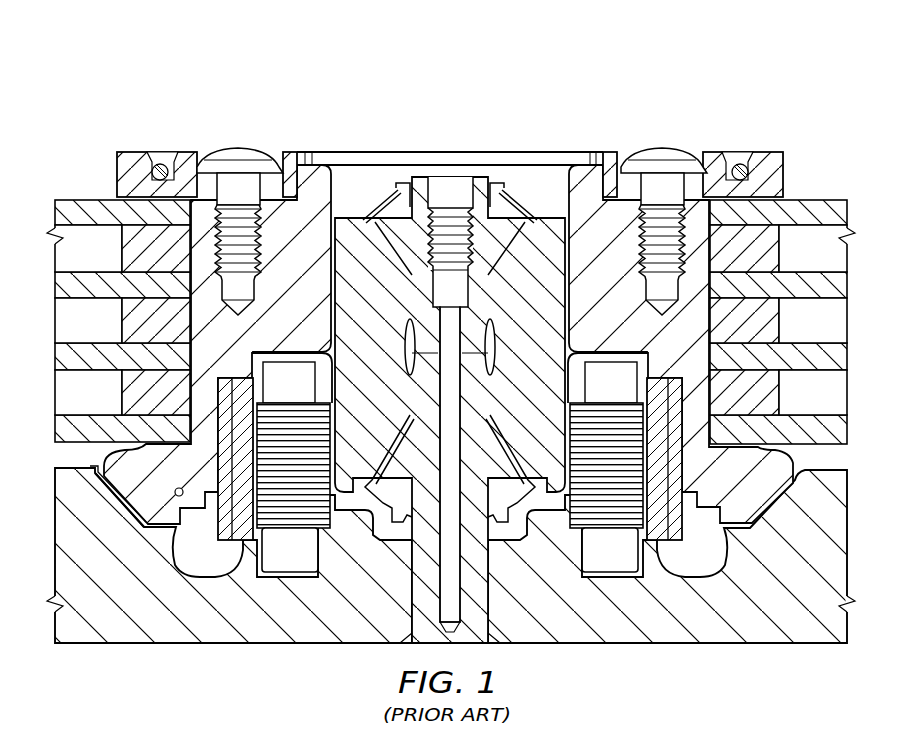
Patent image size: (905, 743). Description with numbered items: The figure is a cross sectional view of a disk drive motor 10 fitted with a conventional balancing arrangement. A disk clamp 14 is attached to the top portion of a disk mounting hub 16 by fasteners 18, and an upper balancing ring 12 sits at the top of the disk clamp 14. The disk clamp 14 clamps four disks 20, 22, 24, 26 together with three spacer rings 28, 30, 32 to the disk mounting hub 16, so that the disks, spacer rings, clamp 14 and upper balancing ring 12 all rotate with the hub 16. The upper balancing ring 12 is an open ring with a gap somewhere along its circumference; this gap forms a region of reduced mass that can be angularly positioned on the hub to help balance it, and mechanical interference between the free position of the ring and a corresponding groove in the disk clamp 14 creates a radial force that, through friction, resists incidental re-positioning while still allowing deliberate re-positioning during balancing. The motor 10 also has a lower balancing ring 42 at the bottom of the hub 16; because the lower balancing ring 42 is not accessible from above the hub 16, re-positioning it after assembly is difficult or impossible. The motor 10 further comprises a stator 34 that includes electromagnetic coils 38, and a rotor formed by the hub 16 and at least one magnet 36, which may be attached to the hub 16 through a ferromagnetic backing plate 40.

The disk drive motor 10 is at (527, 93).
The upper balancing ring 12 is at (735, 152).
The disk clamp 14 is at (148, 152).
The disk mounting hub 16 is at (338, 190).
The fasteners 18 is at (238, 148).
The disk 20 is at (95, 200).
The disk 22 is at (62, 250).
The disk 24 is at (62, 320).
The disk 26 is at (62, 390).
The spacer ring 28 is at (786, 248).
The spacer ring 30 is at (786, 318).
The spacer ring 32 is at (786, 388).
The stator 34 is at (120, 637).
The magnet 36 is at (222, 562).
The electromagnetic coils 38 is at (290, 545).
The ferromagnetic backing plate 40 is at (682, 560).
The lower balancing ring 42 is at (183, 535).